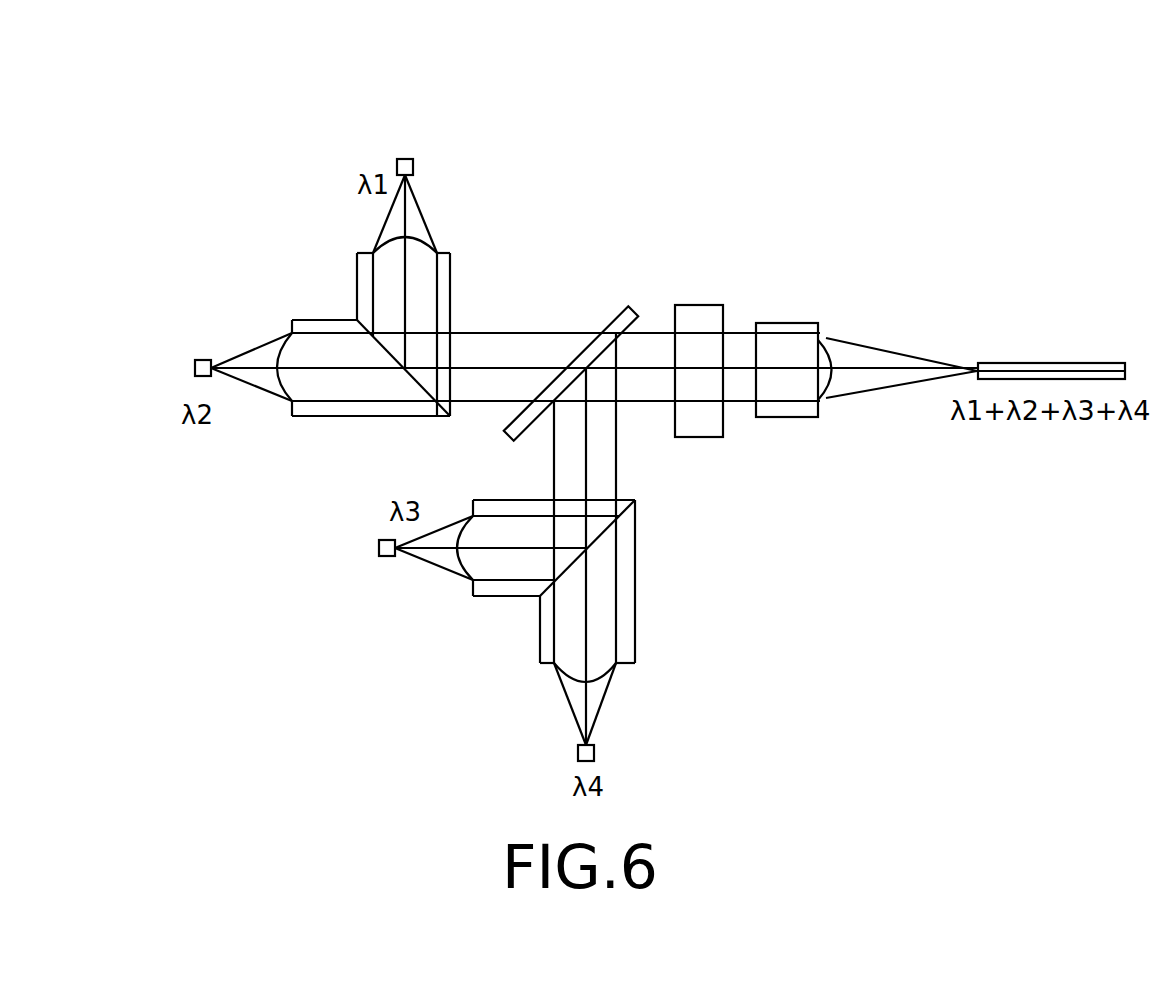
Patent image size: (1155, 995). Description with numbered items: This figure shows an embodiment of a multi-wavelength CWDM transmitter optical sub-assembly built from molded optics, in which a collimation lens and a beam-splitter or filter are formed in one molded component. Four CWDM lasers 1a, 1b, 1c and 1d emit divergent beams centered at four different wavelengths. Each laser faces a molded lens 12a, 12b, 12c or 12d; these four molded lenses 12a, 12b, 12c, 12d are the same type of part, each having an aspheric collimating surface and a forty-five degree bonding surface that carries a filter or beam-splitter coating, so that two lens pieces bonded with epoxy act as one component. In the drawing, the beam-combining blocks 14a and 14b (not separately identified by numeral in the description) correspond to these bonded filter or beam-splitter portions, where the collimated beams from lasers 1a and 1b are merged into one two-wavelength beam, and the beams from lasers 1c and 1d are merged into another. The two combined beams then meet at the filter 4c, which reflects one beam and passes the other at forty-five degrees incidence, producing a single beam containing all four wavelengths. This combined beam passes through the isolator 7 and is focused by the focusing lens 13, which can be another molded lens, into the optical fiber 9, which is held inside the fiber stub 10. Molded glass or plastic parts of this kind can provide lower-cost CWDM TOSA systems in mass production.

The CWDM laser 1a is at (404, 158).
The CWDM laser 1b is at (193, 368).
The CWDM laser 1c is at (378, 550).
The CWDM laser 1d is at (578, 753).
The molded lens 12a is at (362, 252).
The molded lens 12b is at (303, 320).
The molded lens 12c is at (475, 596).
The molded lens 12d is at (538, 653).
The polarizing beam splitter 14a is at (417, 381).
The polarizing beam splitter 14b is at (607, 528).
The filter 4c is at (617, 315).
The isolator 7 is at (697, 305).
The focusing lens 13 is at (782, 323).
The optical fiber 9 is at (1016, 363).
The fiber stub 10 is at (1068, 363).